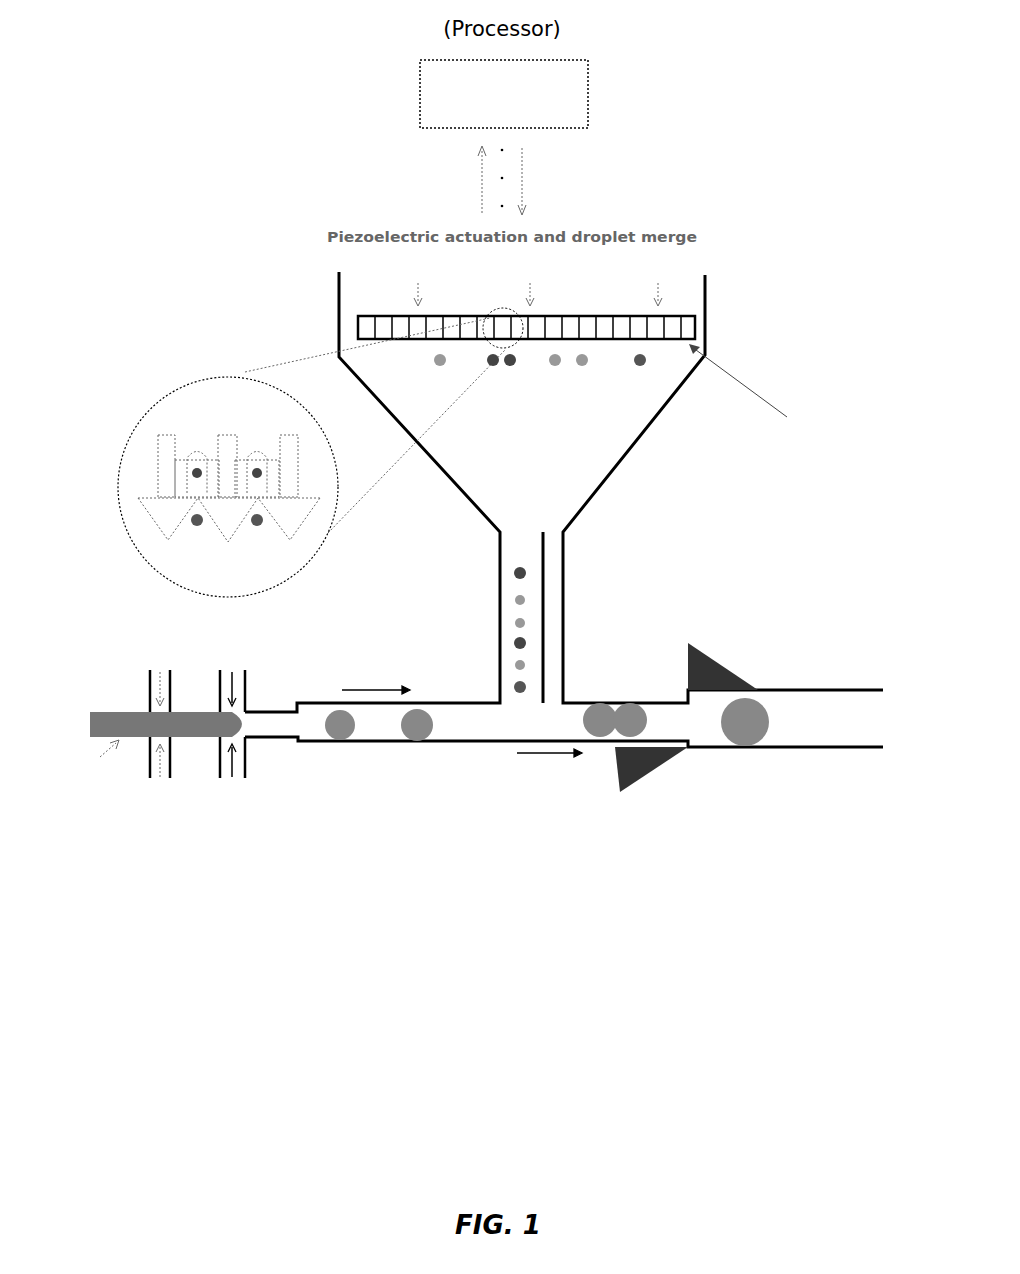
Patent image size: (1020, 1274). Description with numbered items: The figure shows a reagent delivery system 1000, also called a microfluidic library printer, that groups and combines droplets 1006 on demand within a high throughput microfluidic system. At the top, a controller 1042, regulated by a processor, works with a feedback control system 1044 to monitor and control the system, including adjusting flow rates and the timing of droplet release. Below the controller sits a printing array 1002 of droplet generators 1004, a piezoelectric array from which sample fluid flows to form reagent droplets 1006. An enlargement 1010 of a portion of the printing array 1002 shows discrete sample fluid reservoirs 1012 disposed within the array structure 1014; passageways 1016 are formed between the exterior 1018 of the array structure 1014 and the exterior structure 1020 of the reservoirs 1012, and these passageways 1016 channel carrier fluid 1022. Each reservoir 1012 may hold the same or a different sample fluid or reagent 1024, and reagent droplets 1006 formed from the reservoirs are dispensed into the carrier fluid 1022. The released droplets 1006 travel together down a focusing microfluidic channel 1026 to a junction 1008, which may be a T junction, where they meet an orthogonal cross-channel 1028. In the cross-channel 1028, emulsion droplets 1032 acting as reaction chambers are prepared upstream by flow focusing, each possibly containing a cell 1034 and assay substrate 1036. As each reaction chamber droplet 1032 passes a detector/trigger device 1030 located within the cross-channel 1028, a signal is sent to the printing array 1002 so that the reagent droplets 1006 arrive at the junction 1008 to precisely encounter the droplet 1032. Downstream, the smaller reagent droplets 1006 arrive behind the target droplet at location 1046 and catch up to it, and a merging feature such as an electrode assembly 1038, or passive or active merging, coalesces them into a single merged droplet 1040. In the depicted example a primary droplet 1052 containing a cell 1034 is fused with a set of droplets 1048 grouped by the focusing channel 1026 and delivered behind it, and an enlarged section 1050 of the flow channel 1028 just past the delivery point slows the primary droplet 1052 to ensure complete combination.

The reagent delivery system 1000 is at (331, 163).
The printing array 1002 is at (648, 317).
The droplet generator 1004 is at (358, 326).
The droplet 1006 is at (493, 364).
The junction 1008 is at (520, 703).
The enlargement 1010 is at (120, 513).
The sample fluid reservoir 1012 is at (213, 493).
The array structure 1014 is at (230, 437).
The passageway 1016 is at (180, 473).
The exterior of array structure 1018 is at (197, 457).
The exterior structure of sample fluid reservoir 1020 is at (193, 453).
The carrier fluid 1022 is at (227, 447).
The sample fluid or reagent 1024 is at (190, 480).
The microfluidic channel 1026 is at (542, 630).
The cross-channel 1028 is at (485, 720).
The detector/trigger device 1030 is at (416, 708).
The emulsion droplet 1032 is at (328, 742).
The cell 1034 is at (145, 716).
The assay substrate 1036 is at (200, 728).
The electrode assembly 1038 is at (727, 665).
The merged droplet 1040 is at (770, 722).
The controller 1042 is at (576, 117).
The feedback control system 1044 is at (516, 158).
The location 1046 is at (613, 742).
The set of droplets 1048 is at (600, 705).
The enlarged section 1050 is at (695, 710).
The primary droplet 1052 is at (640, 706).